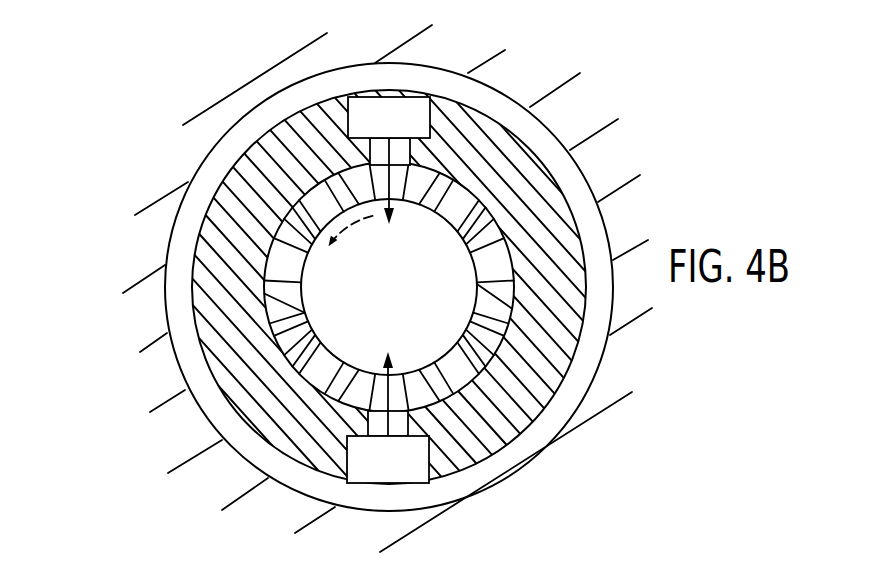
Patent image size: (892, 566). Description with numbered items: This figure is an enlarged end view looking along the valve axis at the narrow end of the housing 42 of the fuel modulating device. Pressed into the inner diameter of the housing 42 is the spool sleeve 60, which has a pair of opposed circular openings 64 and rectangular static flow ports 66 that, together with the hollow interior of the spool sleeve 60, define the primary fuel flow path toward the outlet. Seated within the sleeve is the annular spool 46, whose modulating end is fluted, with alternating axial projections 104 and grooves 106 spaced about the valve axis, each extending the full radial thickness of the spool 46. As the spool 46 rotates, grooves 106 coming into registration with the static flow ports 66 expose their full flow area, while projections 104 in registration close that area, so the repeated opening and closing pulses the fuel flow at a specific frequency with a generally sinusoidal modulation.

The housing 42 is at (588, 178).
The spool sleeve 60 is at (568, 262).
The spool 46 is at (460, 340).
The circular openings 64 is at (330, 100).
The static flow ports 66 is at (393, 133).
The axial projections 104 is at (292, 282).
The grooves 106 is at (292, 317).